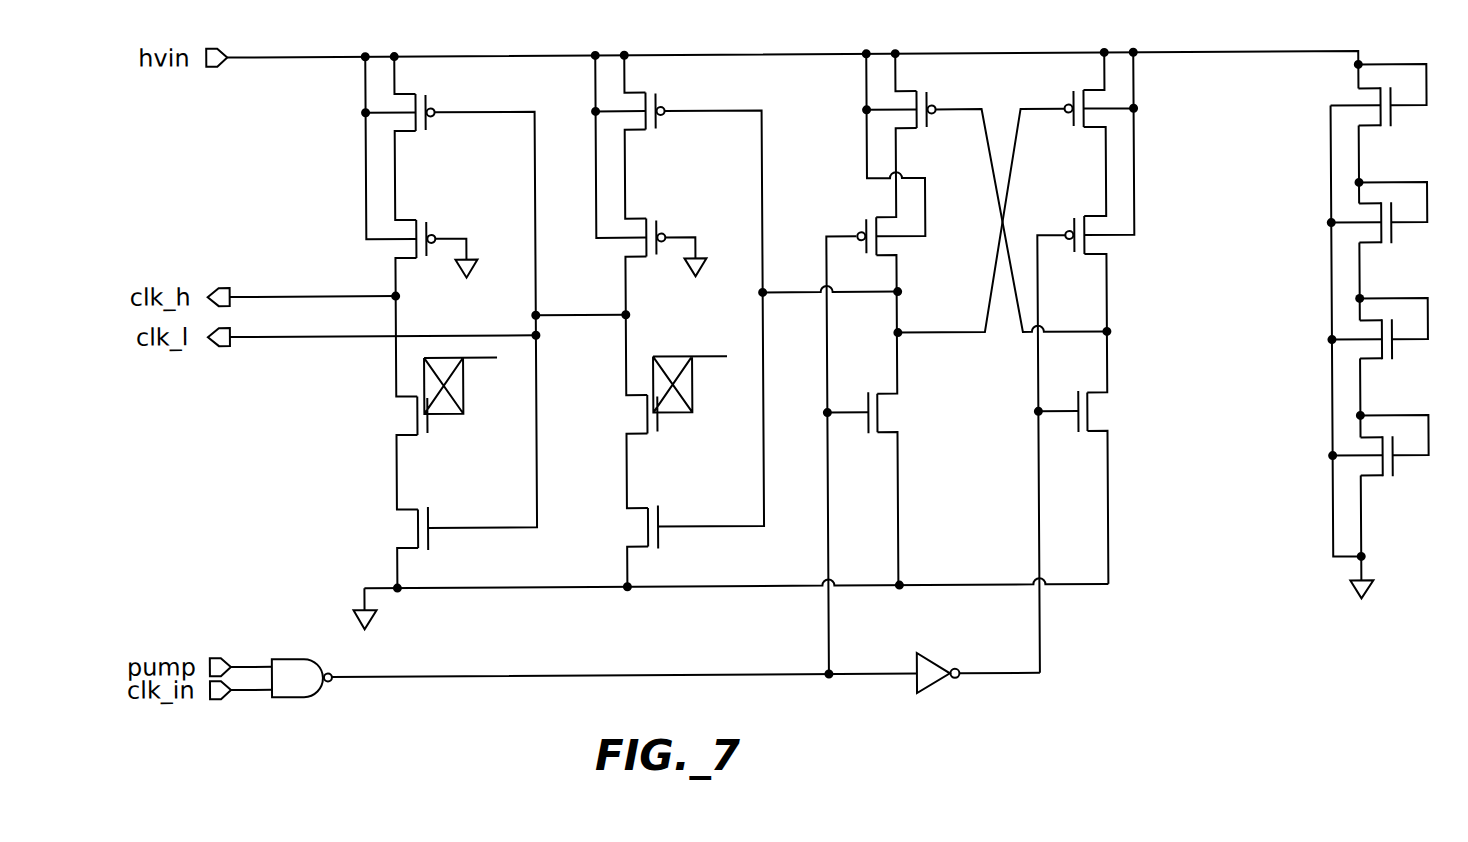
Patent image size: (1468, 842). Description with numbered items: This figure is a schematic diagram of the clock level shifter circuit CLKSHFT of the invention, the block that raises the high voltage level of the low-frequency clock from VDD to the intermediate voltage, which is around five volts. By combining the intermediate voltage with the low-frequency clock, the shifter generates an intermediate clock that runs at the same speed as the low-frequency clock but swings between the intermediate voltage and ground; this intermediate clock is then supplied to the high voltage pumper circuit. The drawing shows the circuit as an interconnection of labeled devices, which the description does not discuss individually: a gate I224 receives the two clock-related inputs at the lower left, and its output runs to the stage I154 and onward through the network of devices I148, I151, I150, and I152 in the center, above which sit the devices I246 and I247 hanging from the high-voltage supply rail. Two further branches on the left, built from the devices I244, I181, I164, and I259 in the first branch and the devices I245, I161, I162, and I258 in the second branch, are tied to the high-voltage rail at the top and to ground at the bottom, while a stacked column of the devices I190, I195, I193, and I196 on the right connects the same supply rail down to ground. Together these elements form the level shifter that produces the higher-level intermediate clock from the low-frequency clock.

The PMOS transistor I244 is at (446, 98).
The PMOS transistor I181 is at (442, 223).
The transistor I164 is at (457, 415).
The NMOS transistor I259 is at (450, 542).
The PMOS transistor I245 is at (677, 96).
The PMOS transistor I161 is at (673, 221).
The transistor I162 is at (687, 412).
The NMOS transistor I258 is at (681, 539).
The PMOS transistor I246 is at (932, 95).
The PMOS transistor I148 is at (850, 220).
The NMOS transistor I151 is at (864, 428).
The PMOS transistor I247 is at (1063, 94).
The PMOS transistor I150 is at (1066, 219).
The NMOS transistor I152 is at (1079, 427).
The inverter I154 is at (978, 661).
The NAND gate I224 is at (302, 678).
The NMOS transistor I190 is at (1412, 114).
The NMOS transistor I195 is at (1413, 230).
The NMOS transistor I193 is at (1414, 349).
The NMOS transistor I196 is at (1415, 467).